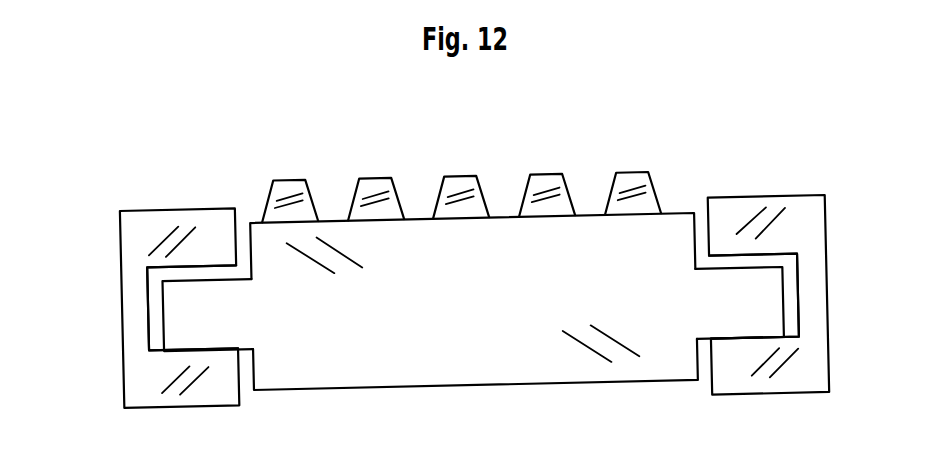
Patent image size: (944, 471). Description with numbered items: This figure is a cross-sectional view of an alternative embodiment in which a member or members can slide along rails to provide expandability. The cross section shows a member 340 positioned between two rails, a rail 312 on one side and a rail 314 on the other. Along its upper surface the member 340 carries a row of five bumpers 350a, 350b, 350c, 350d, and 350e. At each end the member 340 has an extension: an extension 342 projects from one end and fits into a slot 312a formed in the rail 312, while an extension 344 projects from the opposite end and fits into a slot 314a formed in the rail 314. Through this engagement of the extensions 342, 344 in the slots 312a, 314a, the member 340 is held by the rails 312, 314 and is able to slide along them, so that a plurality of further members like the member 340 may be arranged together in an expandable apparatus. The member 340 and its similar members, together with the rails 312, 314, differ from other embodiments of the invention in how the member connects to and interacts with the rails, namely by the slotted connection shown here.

The member 340 is at (675, 228).
The rail 312 is at (217, 232).
The slot 312a is at (155, 295).
The extension 342 is at (207, 328).
The rail 314 is at (730, 205).
The slot 314a is at (778, 262).
The extension 344 is at (753, 308).
The bumper 350a is at (283, 183).
The bumper 350b is at (378, 181).
The bumper 350c is at (467, 185).
The bumper 350d is at (555, 182).
The bumper 350e is at (640, 180).